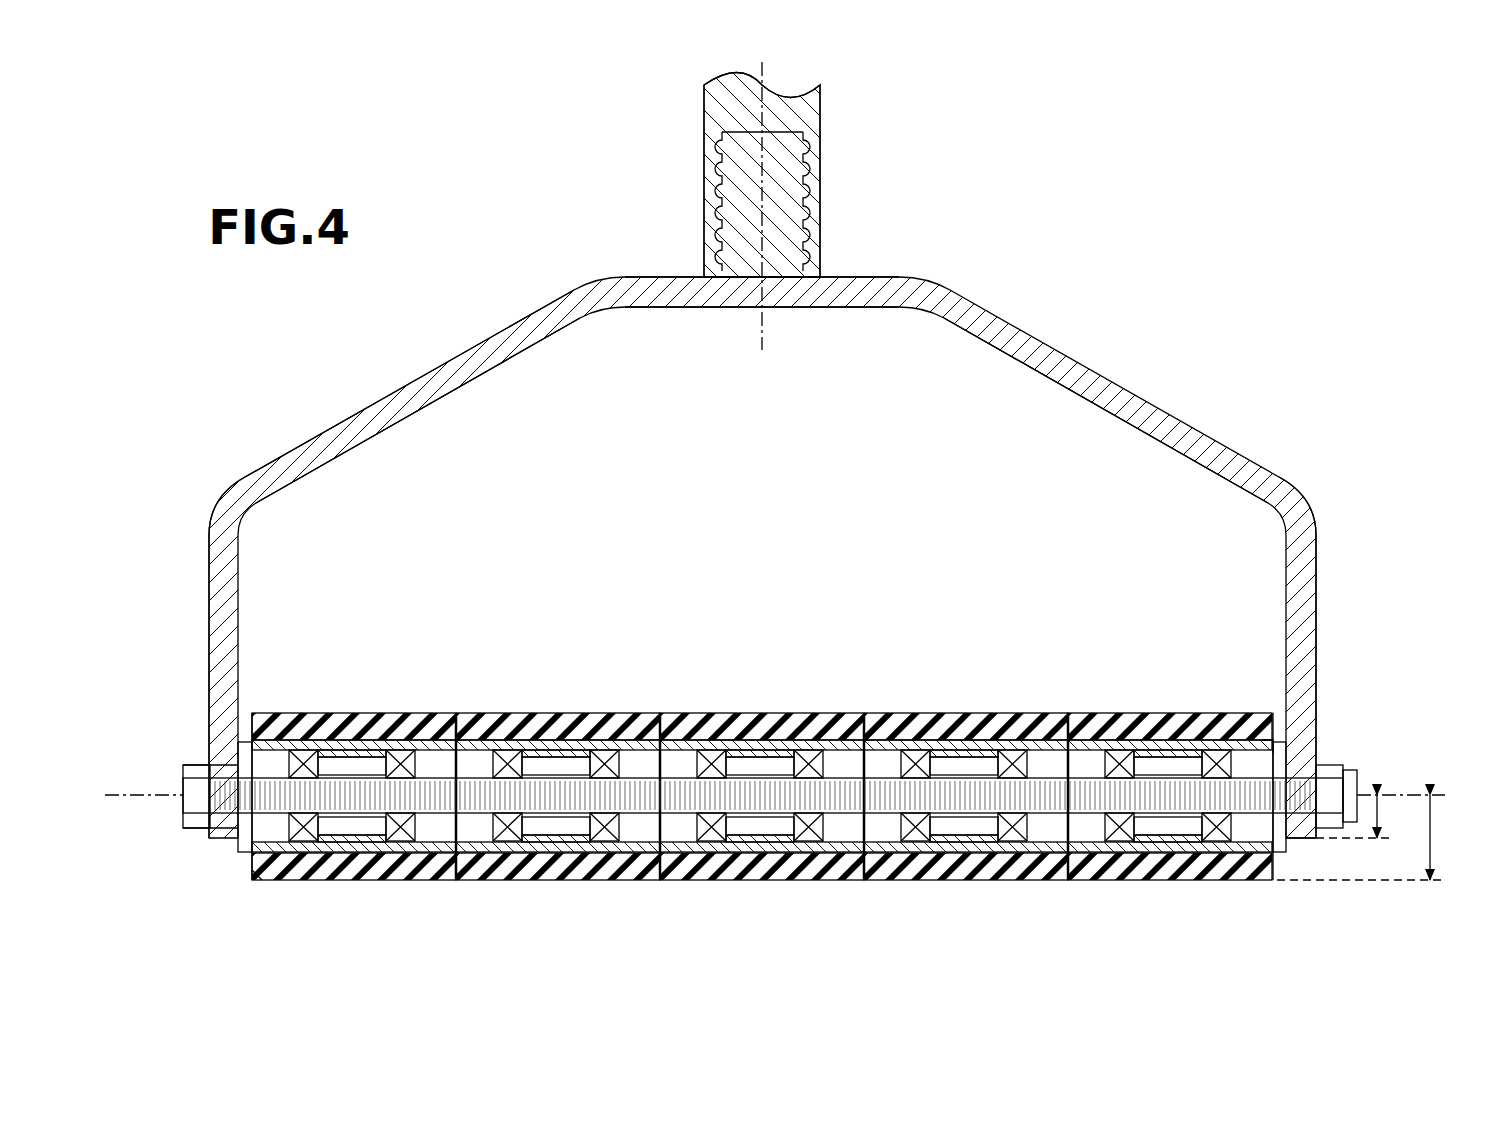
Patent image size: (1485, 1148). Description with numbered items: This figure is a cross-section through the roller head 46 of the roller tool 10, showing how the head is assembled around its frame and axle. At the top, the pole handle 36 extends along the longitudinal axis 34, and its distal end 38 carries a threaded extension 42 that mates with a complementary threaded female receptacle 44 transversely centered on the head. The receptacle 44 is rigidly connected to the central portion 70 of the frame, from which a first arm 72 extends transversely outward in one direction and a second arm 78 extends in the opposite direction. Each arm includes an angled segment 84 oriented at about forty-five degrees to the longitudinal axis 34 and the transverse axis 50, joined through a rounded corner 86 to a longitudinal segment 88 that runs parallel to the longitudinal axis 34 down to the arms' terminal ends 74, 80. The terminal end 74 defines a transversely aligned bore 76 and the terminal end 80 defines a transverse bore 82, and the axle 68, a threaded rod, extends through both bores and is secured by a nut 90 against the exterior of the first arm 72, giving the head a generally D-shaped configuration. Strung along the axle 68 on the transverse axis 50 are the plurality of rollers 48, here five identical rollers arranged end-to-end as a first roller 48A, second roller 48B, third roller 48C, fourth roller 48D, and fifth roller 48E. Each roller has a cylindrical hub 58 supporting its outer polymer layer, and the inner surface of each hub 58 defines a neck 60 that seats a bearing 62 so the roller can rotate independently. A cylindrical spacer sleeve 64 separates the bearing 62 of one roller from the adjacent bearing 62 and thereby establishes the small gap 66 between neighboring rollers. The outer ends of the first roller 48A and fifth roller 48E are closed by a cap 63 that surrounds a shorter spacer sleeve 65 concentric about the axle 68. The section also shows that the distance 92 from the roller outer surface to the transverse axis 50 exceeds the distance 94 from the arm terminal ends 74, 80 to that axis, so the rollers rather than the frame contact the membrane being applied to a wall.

The roller tool 10 is at (1110, 164).
The longitudinal axis 34 is at (765, 346).
The pole handle 36 is at (702, 100).
The distal end of pole handle 38 is at (821, 113).
The threaded extension 42 is at (776, 200).
The threaded receptacle 44 is at (703, 178).
The roller head 46 is at (762, 557).
The first arm 72 is at (1100, 352).
The plurality of rollers 48 is at (762, 746).
The first roller 48A is at (339, 708).
The second roller 48B is at (543, 708).
The third roller 48C is at (747, 708).
The fourth roller 48D is at (951, 708).
The fifth roller 48E is at (1155, 708).
The transverse axis 50 is at (183, 790).
The cylindrical hub 58 is at (371, 744).
The neck 60 is at (328, 757).
The bearing 62 is at (304, 842).
The cap 63 is at (238, 742).
The spacer sleeve 64 is at (430, 753).
The spacer sleeve 65 is at (1264, 742).
The gap 66 is at (455, 712).
The axle 68 is at (190, 822).
The central portion 70 is at (713, 309).
The terminal end 74 is at (1300, 840).
The bore 76 is at (1325, 765).
The second arm 78 is at (386, 384).
The terminal end 80 is at (216, 830).
The bore 82 is at (215, 768).
The angled segment 84 is at (452, 394).
The rounded corner 86 is at (218, 491).
The longitudinal segment 88 is at (208, 628).
The nut 90 is at (1350, 772).
The distance 92 is at (1435, 840).
The distance 94 is at (1382, 812).